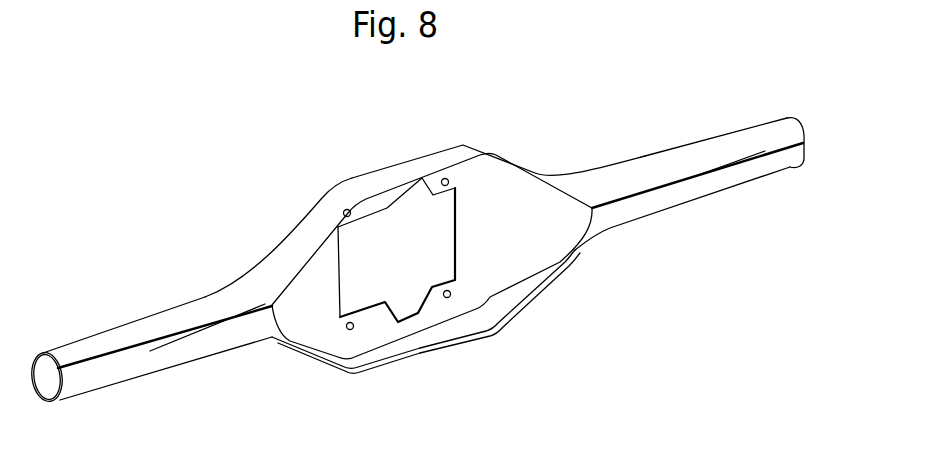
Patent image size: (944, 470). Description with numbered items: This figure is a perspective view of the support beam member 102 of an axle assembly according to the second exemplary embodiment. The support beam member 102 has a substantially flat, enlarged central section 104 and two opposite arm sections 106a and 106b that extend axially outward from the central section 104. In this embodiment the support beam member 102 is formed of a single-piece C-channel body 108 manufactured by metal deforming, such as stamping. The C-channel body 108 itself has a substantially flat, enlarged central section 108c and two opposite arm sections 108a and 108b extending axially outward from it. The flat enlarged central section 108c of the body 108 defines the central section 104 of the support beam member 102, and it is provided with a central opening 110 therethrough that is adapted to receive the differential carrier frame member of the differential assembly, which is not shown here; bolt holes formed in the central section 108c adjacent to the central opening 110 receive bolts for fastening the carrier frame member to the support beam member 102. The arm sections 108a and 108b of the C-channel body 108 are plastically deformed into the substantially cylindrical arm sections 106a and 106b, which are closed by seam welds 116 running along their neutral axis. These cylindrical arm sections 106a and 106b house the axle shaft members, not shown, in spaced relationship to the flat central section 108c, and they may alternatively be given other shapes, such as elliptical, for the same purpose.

The support beam member 102 is at (290, 221).
The central section 104 is at (397, 156).
The arm section 106a is at (694, 145).
The arm section 106b is at (94, 336).
The C-channel body 108 is at (320, 368).
The arm section of the C-channel body 108a is at (785, 170).
The arm section of the C-channel body 108b is at (52, 382).
The central section of the C-channel body 108c is at (486, 281).
The central opening 110 is at (454, 263).
The seam weld 116 is at (143, 350).